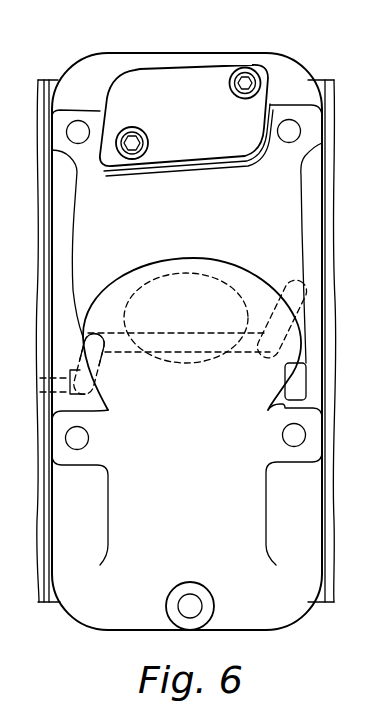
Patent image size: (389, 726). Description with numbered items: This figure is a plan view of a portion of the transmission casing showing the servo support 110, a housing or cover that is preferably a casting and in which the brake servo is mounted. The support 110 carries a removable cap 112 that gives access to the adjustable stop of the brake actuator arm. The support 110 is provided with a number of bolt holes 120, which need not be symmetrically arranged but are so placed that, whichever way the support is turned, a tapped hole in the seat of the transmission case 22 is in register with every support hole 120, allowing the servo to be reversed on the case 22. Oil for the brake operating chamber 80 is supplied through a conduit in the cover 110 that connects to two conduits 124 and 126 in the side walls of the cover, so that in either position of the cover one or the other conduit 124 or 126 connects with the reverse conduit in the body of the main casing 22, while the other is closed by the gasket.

The servo support 110 is at (292, 77).
The removable cap 112 is at (208, 82).
The bolt holes 120 is at (81, 127).
The transmission case 22 is at (322, 84).
The brake operating chamber 80 is at (198, 272).
The conduit 124 is at (286, 286).
The conduit 126 is at (107, 362).